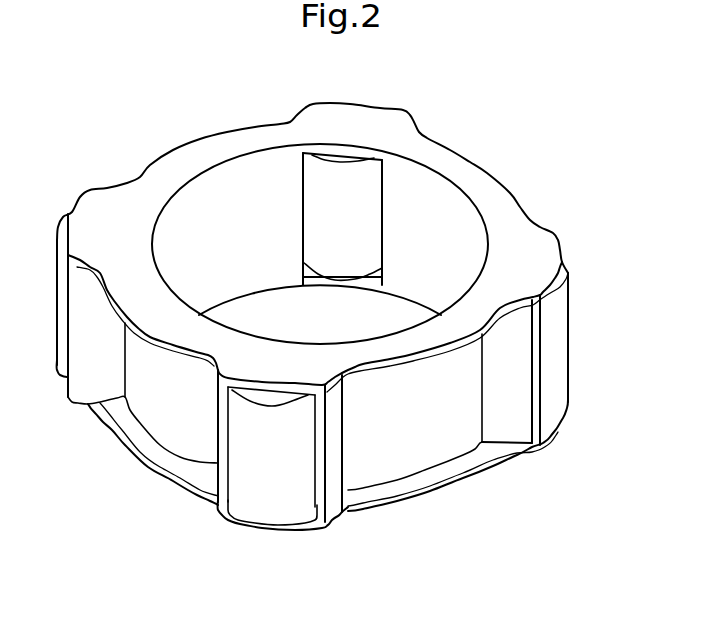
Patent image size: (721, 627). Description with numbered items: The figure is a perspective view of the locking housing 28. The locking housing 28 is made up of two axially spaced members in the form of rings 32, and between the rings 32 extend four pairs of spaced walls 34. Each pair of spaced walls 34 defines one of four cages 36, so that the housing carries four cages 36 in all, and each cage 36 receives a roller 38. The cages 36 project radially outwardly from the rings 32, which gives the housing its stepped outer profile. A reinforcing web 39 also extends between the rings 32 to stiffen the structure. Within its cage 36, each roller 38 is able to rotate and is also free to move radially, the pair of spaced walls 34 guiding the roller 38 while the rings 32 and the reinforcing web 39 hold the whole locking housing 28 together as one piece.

The locking housing 28 is at (515, 125).
The ring 32 is at (500, 200).
The spaced wall 34 is at (222, 455).
The cage 36 is at (223, 543).
The roller 38 is at (275, 493).
The reinforcing web 39 is at (158, 417).